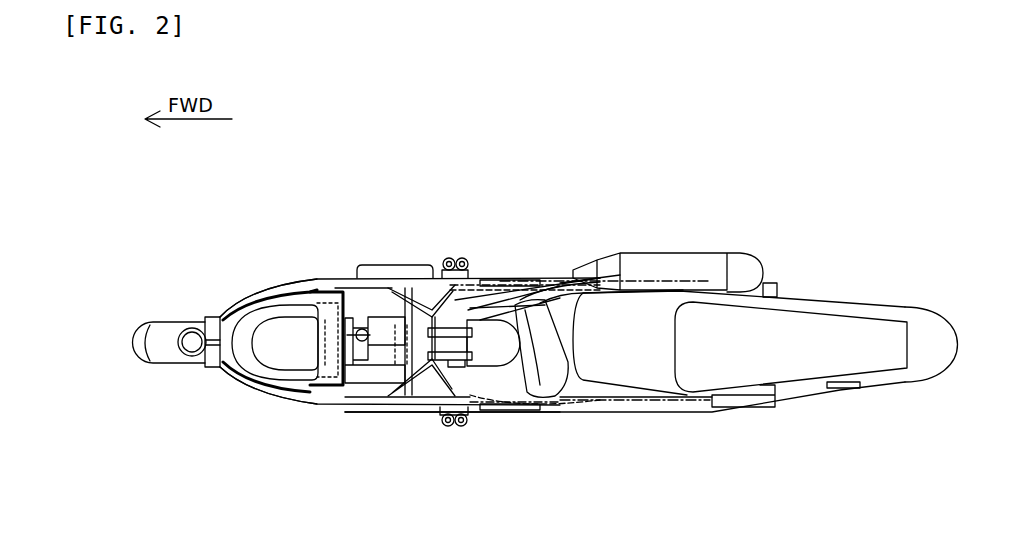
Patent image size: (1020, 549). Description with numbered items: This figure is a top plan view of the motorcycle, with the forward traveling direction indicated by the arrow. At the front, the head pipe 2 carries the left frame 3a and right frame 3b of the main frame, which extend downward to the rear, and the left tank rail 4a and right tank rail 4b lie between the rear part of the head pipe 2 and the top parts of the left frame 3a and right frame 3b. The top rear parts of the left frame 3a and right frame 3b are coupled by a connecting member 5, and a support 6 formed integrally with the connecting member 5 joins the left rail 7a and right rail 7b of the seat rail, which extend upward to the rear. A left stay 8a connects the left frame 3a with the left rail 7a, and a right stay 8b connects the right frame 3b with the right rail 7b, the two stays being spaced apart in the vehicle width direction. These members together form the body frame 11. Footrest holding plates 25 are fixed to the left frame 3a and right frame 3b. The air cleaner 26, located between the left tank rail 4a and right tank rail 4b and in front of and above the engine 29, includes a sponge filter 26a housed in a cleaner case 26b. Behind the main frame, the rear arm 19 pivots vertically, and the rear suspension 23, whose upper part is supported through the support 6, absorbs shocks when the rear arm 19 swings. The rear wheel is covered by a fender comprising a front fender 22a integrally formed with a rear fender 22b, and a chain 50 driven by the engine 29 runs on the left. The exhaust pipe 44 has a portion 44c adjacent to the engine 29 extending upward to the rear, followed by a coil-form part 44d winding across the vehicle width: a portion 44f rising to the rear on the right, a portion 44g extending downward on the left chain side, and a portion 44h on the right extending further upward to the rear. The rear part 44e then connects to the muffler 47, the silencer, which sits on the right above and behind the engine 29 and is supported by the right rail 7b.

The head pipe 2 is at (167, 330).
The left frame 3a is at (367, 404).
The right frame 3b is at (345, 283).
The left tank rail 4a is at (242, 393).
The right tank rail 4b is at (227, 303).
The connecting member 5 is at (420, 314).
The support 6 is at (458, 326).
The left rail 7a is at (657, 412).
The right rail 7b is at (657, 280).
The left stay 8a is at (490, 413).
The right stay 8b is at (555, 295).
The body frame 11 is at (334, 431).
The rear arm 19 is at (770, 285).
The front fender 22a is at (607, 368).
The rear fender 22b is at (803, 318).
The rear suspension 23 is at (515, 405).
The footrest holding plates 25 is at (447, 258).
The air cleaner 26 is at (278, 285).
The sponge filter 26a is at (263, 350).
The cleaner case 26b is at (290, 394).
The engine 29 is at (405, 248).
The exhaust pipe 44 is at (562, 398).
The portion 44c is at (468, 296).
The coil-form part 44d is at (560, 275).
The rear part 44e is at (587, 270).
The portion 44f is at (540, 283).
The portion 44g is at (554, 402).
The portion 44h is at (535, 300).
The muffler 47 is at (707, 260).
The chain 50 is at (843, 389).